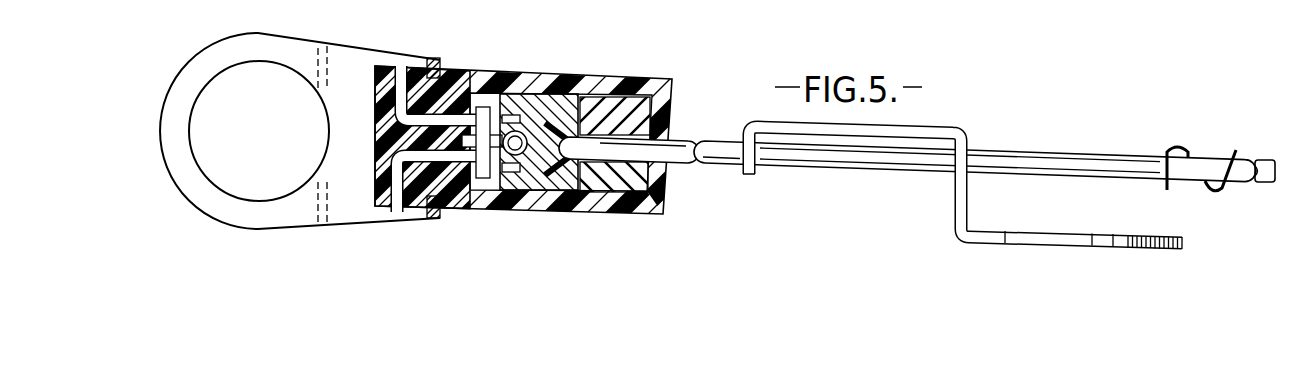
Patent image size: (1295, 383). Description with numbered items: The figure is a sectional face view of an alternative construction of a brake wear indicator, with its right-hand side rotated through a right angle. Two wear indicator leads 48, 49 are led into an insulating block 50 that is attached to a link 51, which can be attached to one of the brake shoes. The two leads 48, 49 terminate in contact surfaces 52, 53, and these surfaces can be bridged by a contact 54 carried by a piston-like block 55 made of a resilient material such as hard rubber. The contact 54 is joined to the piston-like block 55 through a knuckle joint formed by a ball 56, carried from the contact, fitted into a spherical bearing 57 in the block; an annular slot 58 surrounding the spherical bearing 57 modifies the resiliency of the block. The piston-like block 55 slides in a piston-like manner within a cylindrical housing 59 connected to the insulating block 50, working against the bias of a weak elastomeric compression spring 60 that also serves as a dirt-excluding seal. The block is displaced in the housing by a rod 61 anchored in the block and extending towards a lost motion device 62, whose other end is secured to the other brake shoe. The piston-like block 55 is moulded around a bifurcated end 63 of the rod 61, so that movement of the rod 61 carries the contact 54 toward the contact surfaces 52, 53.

The wear indicator lead 48 is at (398, 208).
The wear indicator lead 49 is at (400, 66).
The insulating block 50 is at (418, 66).
The link 51 is at (322, 25).
The contact surface 52 is at (473, 117).
The contact surface 53 is at (477, 178).
The contact 54 is at (490, 107).
The piston-like block 55 is at (560, 105).
The ball 56 is at (539, 183).
The spherical bearing 57 is at (519, 133).
The annular slot 58 is at (507, 172).
The cylindrical housing 59 is at (665, 96).
The elastomeric compression spring 60 is at (628, 183).
The rod 61 is at (1075, 153).
The lost motion device 62 is at (1126, 264).
The bifurcated end 63 is at (573, 197).